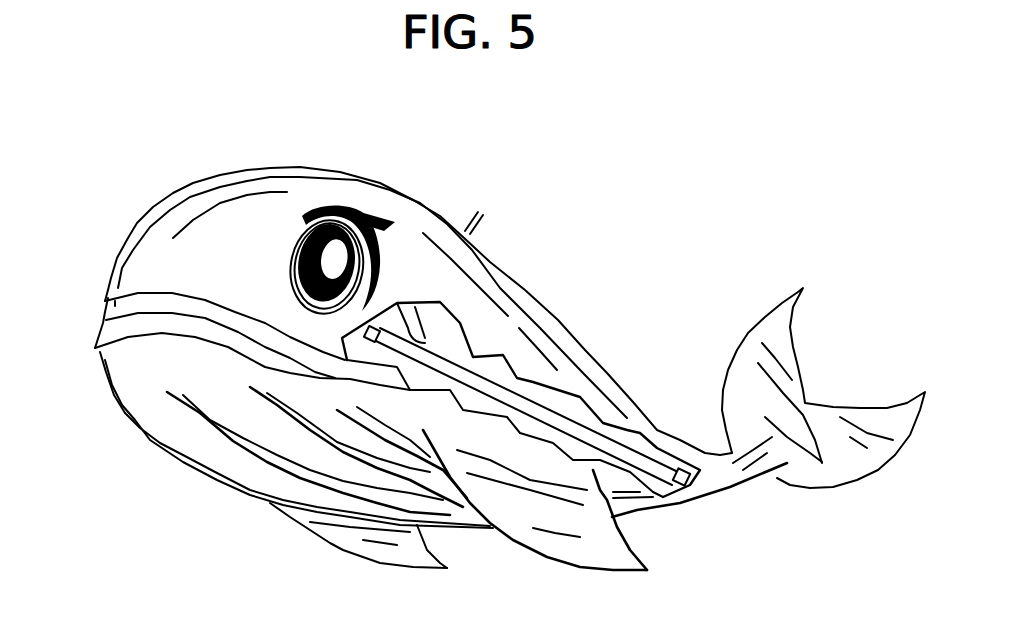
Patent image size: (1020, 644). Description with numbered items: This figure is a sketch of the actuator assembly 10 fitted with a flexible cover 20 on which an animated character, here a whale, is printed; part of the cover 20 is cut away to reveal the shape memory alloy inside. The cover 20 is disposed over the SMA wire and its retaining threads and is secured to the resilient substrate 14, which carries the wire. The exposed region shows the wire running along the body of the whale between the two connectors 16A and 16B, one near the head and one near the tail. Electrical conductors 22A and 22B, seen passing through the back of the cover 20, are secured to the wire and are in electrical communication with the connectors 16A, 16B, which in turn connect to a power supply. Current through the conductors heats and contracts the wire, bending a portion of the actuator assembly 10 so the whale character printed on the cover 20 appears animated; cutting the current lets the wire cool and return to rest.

The actuator assembly 10 is at (757, 186).
The resilient substrate 14 is at (497, 402).
The connector 16A is at (384, 331).
The connector 16B is at (681, 486).
The flexible cover 20 is at (265, 197).
The electrical conductor 22A is at (466, 220).
The electrical conductor 22B is at (480, 220).